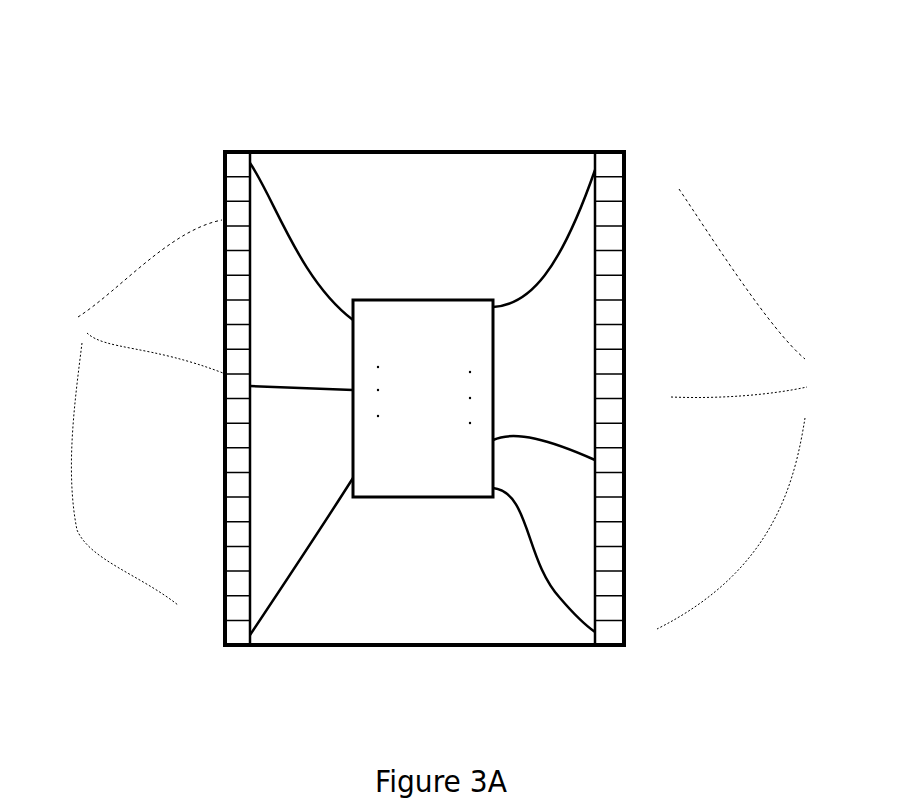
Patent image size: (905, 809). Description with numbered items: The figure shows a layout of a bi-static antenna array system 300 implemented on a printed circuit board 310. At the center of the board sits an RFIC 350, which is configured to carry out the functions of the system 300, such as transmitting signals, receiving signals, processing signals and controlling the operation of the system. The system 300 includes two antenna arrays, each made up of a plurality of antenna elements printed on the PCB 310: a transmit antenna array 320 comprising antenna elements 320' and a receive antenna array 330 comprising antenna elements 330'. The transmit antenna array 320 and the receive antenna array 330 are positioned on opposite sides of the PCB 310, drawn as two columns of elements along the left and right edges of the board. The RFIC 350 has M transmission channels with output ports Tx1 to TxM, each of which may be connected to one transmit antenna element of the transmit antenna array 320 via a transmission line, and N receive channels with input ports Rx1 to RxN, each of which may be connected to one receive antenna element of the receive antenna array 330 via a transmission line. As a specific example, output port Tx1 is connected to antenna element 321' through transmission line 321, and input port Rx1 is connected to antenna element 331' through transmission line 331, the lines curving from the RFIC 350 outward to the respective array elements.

The bi-static antenna array system 300 is at (174, 79).
The printed circuit board 310 is at (313, 647).
The transmit antenna array 320 is at (220, 356).
The antenna elements 320' is at (132, 412).
The transmission line 321 is at (301, 375).
The antenna element 321' is at (269, 122).
The receive antenna array 330 is at (654, 356).
The antenna elements 330' is at (759, 409).
The transmission line 331 is at (541, 444).
The antenna element 331' is at (638, 122).
The RFIC 350 is at (433, 298).